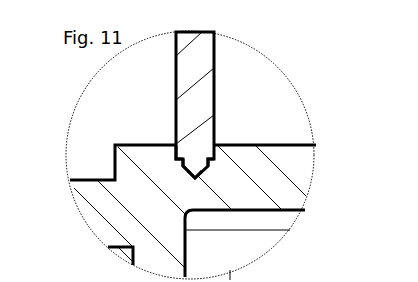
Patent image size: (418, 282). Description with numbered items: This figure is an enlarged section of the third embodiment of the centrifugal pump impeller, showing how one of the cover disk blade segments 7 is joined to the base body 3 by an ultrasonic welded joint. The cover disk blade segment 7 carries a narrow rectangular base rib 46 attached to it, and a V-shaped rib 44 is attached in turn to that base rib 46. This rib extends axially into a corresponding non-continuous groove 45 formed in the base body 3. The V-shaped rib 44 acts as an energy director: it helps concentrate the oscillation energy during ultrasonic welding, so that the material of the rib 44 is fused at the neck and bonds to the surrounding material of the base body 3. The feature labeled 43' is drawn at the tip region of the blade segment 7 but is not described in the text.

The cover disk blade segment 7 is at (217, 78).
The pin tip shoulder 43' is at (288, 124).
The groove 45 is at (192, 156).
The base rib 46 is at (206, 162).
The V-shaped rib 44 is at (199, 175).
The base body 3 is at (288, 197).